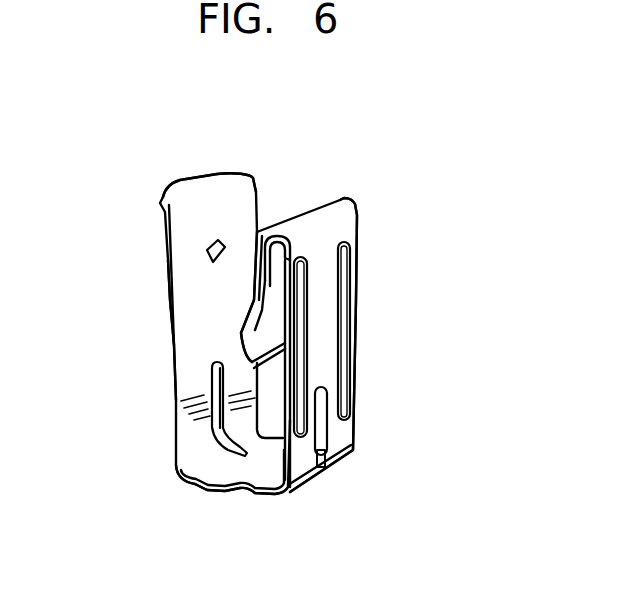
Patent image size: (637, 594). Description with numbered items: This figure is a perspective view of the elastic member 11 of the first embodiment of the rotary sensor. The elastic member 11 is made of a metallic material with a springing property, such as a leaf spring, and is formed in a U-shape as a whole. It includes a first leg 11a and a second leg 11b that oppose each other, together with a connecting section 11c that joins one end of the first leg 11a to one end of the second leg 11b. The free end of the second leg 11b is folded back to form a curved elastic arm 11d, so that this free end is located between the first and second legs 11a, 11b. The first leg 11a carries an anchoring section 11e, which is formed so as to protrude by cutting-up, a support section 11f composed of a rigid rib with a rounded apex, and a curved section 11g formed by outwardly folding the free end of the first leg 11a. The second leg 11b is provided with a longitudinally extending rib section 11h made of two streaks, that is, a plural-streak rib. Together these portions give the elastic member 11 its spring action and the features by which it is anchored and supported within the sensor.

The elastic member 11 is at (350, 201).
The first leg 11a is at (188, 423).
The second leg 11b is at (338, 435).
The connecting section 11c is at (263, 469).
The curved elastic arm 11d is at (240, 323).
The anchoring section 11e is at (226, 248).
The support section 11f is at (172, 346).
The curved section 11g is at (207, 200).
The rib section 11h is at (303, 364).